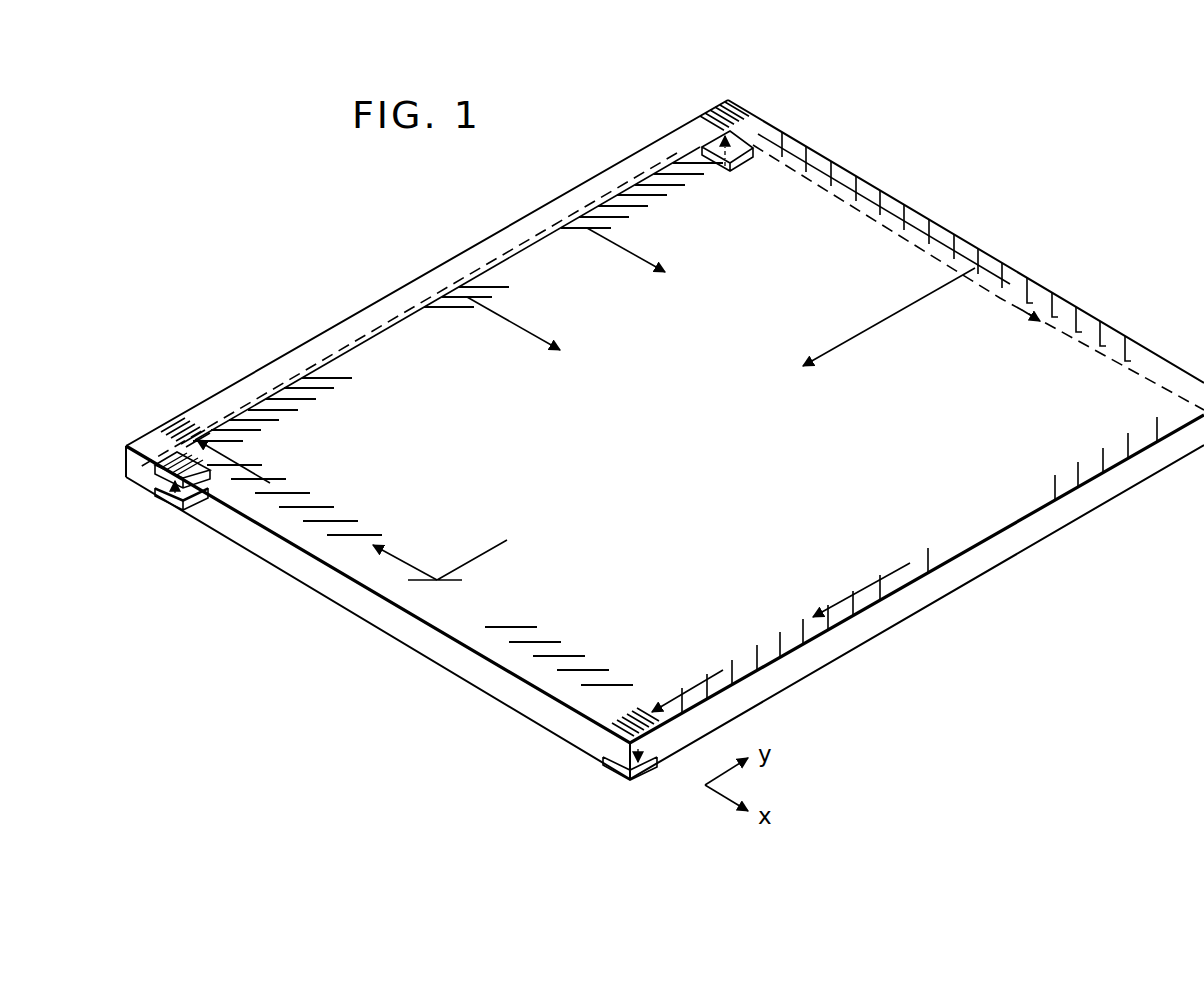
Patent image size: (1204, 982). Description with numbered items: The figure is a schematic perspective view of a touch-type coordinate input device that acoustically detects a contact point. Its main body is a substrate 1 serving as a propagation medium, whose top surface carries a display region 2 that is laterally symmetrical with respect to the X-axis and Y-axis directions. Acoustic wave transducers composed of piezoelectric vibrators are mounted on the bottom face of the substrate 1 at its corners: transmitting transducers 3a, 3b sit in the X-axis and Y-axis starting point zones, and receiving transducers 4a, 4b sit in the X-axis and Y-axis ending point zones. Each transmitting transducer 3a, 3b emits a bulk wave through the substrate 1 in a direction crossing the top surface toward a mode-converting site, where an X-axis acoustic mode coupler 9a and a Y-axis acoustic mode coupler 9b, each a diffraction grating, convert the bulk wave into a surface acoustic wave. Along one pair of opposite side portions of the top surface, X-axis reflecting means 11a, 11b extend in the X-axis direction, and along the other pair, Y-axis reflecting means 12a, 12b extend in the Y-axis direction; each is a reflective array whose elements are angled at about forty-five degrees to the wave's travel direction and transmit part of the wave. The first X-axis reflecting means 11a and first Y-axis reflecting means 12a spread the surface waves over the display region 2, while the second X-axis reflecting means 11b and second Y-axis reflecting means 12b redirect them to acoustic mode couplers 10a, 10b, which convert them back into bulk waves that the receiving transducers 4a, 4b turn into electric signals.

The substrate 1 is at (902, 612).
The display region 2 is at (889, 342).
The transmitting transducer 3a is at (756, 138).
The transmitting transducer 3b is at (188, 508).
The receiving transducer 4a is at (158, 495).
The receiving transducer 4b is at (620, 770).
The X-axis acoustic mode coupler 9a is at (718, 108).
The Y-axis acoustic mode coupler 9b is at (157, 470).
The X-axis acoustic mode coupler 10a is at (177, 423).
The Y-axis acoustic mode coupler 10b is at (617, 725).
The first X-axis reflecting means 11a is at (905, 217).
The second X-axis reflecting means 11b is at (487, 630).
The first Y-axis reflecting means 12a is at (443, 306).
The second Y-axis reflecting means 12b is at (928, 548).